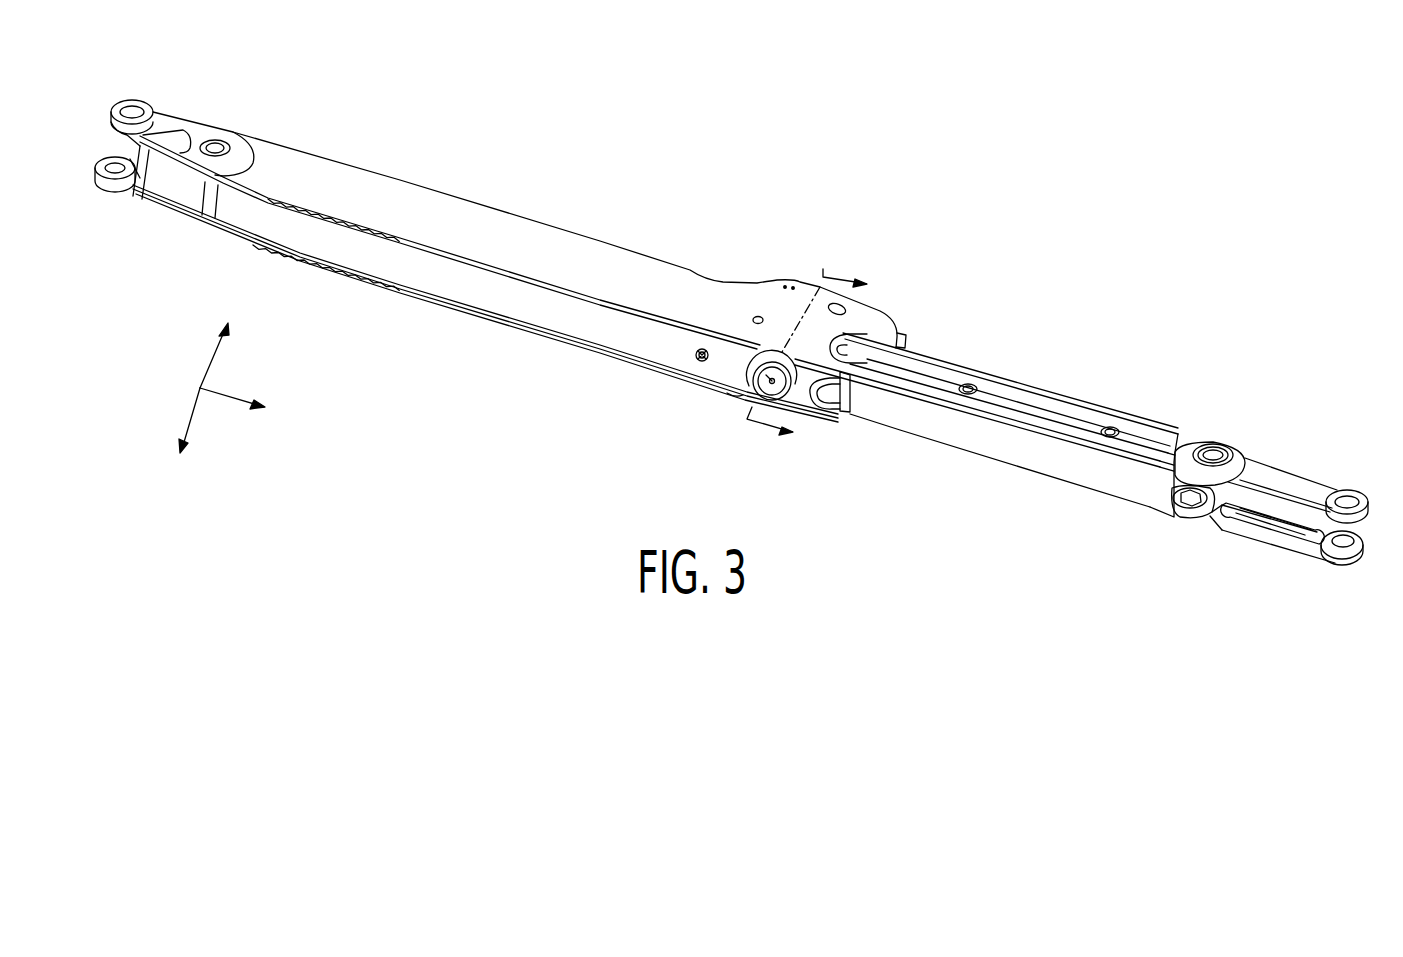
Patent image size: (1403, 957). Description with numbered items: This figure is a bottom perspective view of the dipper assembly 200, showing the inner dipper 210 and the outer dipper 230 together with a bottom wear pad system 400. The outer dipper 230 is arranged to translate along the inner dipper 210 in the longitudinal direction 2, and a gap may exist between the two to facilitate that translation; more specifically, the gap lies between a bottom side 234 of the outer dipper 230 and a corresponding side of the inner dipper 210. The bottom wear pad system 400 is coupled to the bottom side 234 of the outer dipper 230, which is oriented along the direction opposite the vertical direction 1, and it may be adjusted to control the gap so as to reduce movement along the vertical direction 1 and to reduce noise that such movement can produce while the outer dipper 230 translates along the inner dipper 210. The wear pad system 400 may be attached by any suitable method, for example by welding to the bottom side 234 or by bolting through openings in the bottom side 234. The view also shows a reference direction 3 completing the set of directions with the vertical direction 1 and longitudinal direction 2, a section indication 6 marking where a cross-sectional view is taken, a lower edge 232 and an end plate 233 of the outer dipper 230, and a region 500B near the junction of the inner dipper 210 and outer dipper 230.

The support arm assembly 200 is at (936, 250).
The inner dipper 210 is at (996, 446).
The outer dipper 230 is at (447, 205).
The lower edge of body 232 is at (433, 302).
The mounting plate 233 is at (340, 177).
The bottom side 234 is at (545, 312).
The bottom wear pad system 400 is at (814, 427).
The pivot section 500B is at (820, 287).
The section line 6- 6 is at (809, 358).
The vertical direction 1 is at (210, 361).
The longitudinal direction 2 is at (228, 392).
The third axis 3 is at (189, 411).